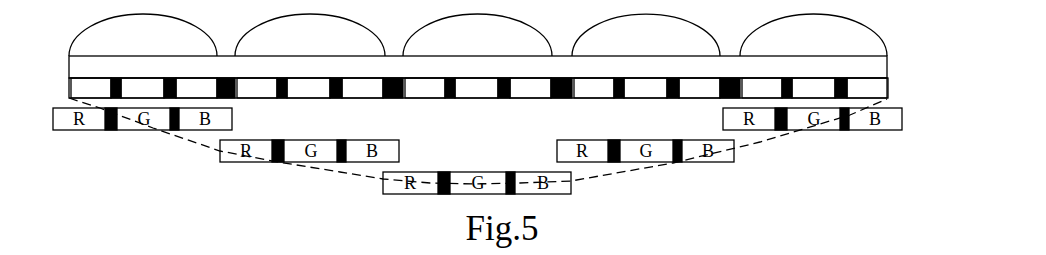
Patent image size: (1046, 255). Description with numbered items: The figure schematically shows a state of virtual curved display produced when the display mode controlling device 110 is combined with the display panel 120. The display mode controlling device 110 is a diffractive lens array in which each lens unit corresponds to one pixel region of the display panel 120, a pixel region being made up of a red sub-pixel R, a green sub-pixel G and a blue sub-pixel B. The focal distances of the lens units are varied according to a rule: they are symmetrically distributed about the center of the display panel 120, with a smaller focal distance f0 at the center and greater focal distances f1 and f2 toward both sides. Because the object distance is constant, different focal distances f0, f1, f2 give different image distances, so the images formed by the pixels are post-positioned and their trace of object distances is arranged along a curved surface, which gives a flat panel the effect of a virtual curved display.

The display mode controlling device 110 is at (513, 46).
The display panel 120 is at (887, 88).
The lens with focal length f0 is at (477, 35).
The lens with focal length f1 is at (477, 35).
The lens with focal length f2 is at (478, 35).